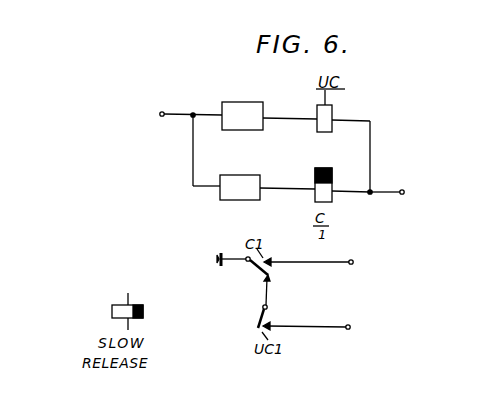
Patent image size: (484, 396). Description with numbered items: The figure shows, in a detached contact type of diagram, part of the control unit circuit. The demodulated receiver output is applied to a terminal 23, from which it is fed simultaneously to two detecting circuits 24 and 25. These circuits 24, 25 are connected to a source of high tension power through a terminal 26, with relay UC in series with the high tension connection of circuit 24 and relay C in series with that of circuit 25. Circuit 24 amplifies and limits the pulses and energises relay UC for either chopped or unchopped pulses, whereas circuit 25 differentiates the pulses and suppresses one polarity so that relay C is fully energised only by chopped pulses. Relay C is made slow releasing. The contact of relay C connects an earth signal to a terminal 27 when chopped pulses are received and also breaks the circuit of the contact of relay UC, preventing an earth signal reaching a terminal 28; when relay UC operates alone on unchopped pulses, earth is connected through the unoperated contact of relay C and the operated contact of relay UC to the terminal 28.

The terminal 23 is at (162, 112).
The detecting circuit 24 is at (242, 102).
The detecting circuit 25 is at (263, 177).
The terminal 26 is at (403, 190).
The terminal 27 is at (352, 260).
The terminal 28 is at (350, 325).